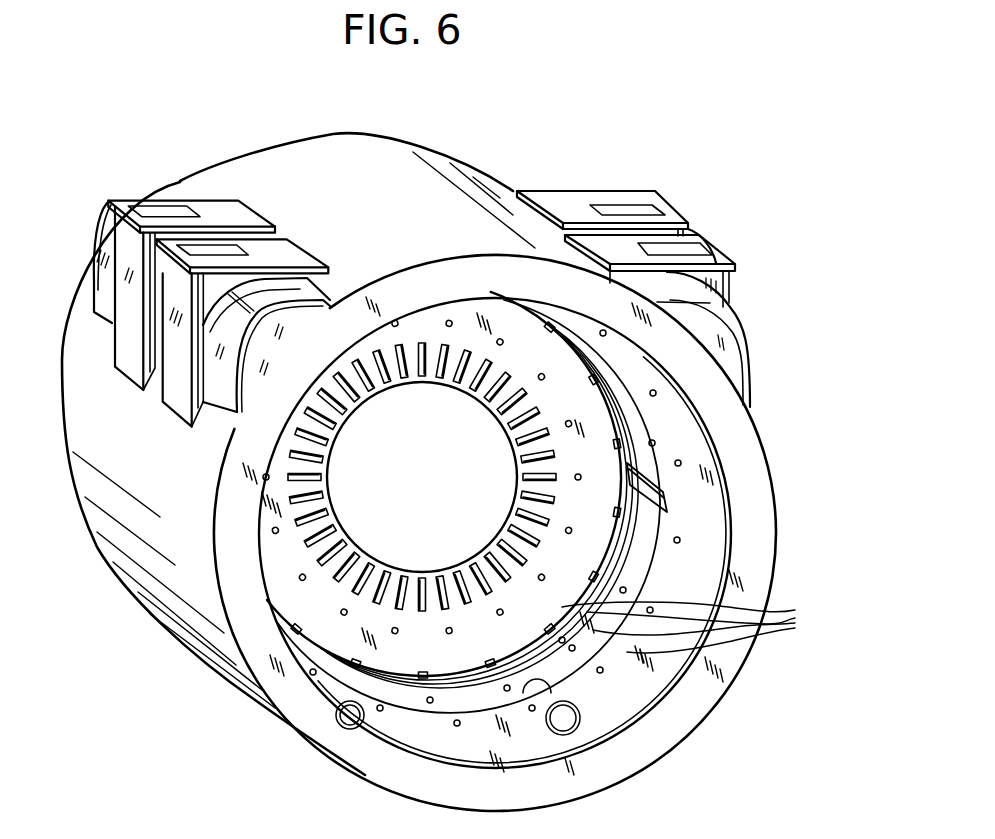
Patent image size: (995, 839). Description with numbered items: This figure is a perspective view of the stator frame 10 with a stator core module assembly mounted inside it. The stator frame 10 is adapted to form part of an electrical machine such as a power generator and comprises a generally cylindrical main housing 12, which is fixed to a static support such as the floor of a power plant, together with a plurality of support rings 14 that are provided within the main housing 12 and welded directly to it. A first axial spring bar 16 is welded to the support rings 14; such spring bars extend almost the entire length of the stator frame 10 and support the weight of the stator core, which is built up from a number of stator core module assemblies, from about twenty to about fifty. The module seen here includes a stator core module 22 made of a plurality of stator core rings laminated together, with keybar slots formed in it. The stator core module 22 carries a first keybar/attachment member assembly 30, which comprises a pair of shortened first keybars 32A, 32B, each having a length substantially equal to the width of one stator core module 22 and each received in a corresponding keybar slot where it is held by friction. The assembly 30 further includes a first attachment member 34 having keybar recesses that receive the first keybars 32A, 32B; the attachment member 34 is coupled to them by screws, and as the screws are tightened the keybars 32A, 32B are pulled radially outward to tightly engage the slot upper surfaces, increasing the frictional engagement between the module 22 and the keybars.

The stator frame 10 is at (797, 414).
The main housing 12 is at (755, 547).
The support rings 14 is at (695, 627).
The first axial spring bar 16 is at (627, 500).
The stator core module 22 is at (484, 638).
The first keybar/attachment member assembly 30 is at (607, 481).
The first keybar 32A is at (614, 440).
The first keybar 32B is at (617, 512).
The first attachment member 34 is at (630, 452).